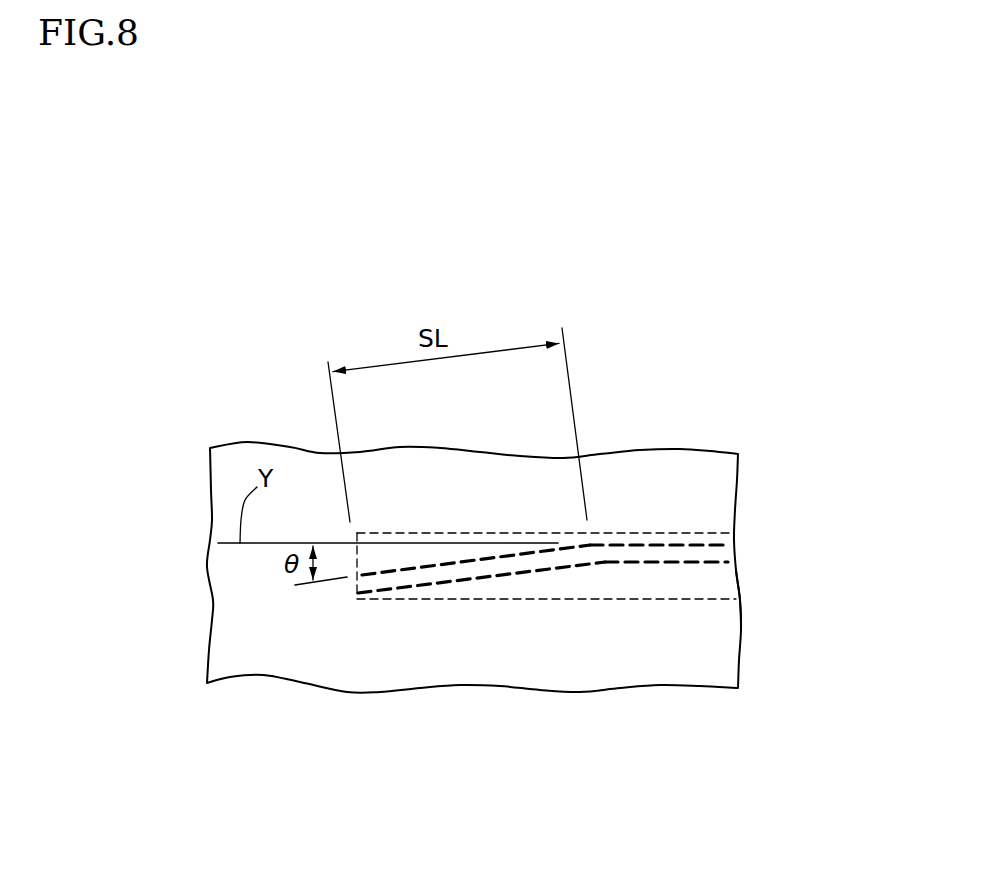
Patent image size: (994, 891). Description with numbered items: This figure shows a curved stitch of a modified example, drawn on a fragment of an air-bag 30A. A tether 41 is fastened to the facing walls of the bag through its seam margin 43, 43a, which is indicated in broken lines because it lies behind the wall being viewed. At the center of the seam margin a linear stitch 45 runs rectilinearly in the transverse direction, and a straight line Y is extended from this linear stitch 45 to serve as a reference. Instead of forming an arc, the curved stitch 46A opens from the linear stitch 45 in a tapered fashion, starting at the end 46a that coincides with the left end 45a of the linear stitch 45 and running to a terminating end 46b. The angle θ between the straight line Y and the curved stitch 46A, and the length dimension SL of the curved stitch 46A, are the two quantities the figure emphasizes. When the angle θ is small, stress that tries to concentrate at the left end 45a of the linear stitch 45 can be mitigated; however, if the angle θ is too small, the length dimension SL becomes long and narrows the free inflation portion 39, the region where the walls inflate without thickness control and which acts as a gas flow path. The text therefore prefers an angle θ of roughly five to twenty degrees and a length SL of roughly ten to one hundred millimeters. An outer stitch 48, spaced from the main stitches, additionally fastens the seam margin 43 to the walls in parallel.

The air-bag 30A is at (220, 432).
The free inflation portion 39 is at (213, 567).
The tether 41 is at (722, 586).
The seam margin 43 is at (548, 650).
The groove wall 43a is at (683, 585).
The linear stitch 45 is at (696, 566).
The left end of linear stitch 45a is at (667, 461).
The curved stitch 46A is at (507, 491).
The end of curved stitch 46a is at (657, 403).
The terminating end of curved stitch 46b is at (343, 588).
The outer stitch 48 is at (608, 562).